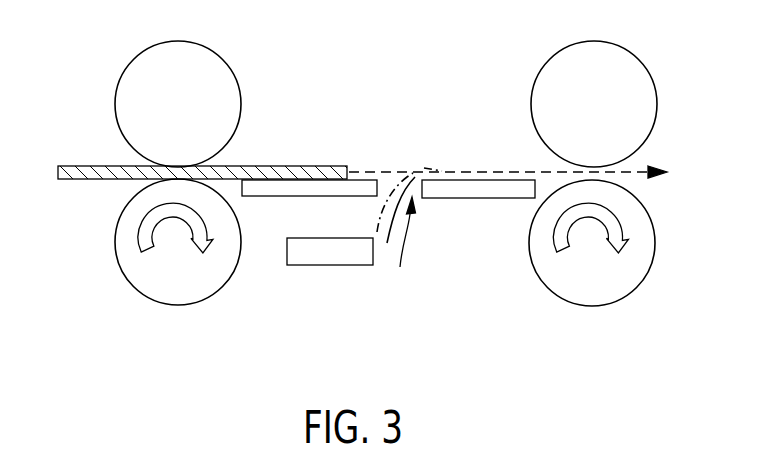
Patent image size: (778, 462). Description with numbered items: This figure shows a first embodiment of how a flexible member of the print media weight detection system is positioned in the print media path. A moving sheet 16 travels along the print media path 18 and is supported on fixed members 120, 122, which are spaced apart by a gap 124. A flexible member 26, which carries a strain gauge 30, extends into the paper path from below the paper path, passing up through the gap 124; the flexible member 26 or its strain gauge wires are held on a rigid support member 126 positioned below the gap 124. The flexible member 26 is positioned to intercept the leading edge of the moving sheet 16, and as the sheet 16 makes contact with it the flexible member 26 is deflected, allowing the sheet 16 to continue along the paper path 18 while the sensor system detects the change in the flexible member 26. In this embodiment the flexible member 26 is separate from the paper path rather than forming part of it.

The moving sheet 16 is at (80, 166).
The print media path 18 is at (497, 170).
The flexible member 26 is at (414, 174).
The strain gauge 30 is at (387, 243).
The fixed member 120 is at (285, 197).
The fixed member 122 is at (478, 199).
The gap 124 is at (407, 244).
The rigid support member 126 is at (332, 266).